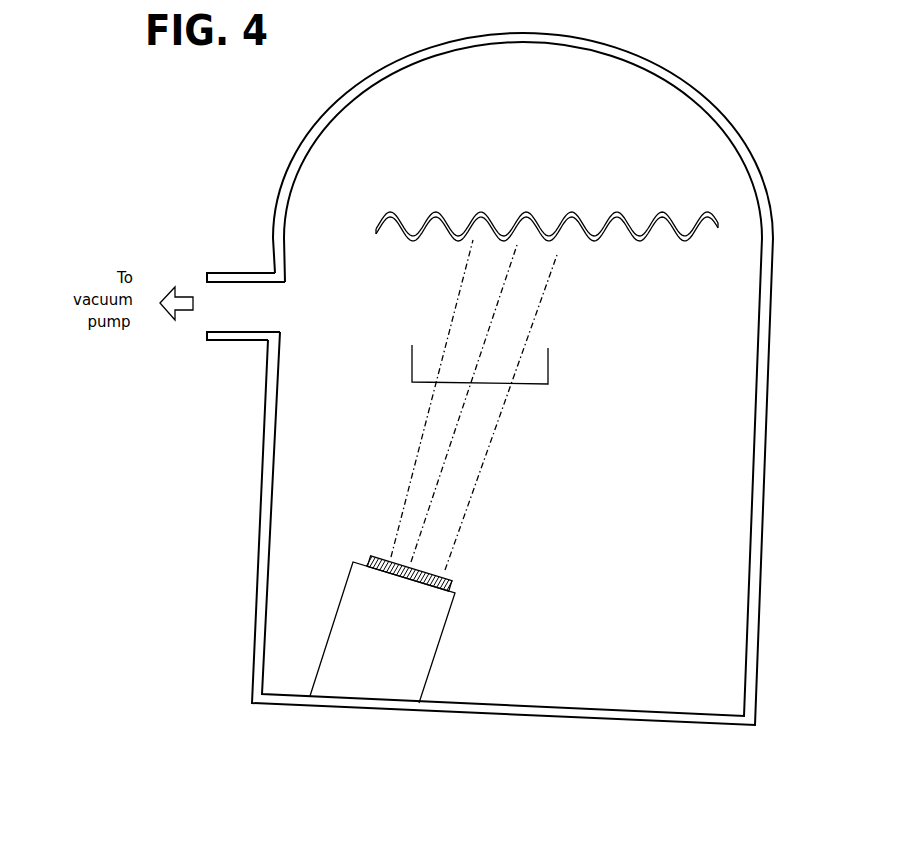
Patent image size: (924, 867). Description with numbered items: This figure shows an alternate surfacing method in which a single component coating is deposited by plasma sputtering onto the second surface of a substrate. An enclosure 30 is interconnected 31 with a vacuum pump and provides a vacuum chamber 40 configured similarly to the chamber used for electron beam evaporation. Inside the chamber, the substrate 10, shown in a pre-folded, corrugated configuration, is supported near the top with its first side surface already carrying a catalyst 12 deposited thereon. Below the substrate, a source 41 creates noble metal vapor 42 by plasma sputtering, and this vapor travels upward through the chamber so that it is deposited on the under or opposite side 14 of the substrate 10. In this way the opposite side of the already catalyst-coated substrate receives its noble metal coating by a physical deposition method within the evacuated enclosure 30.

The enclosure 30 is at (738, 132).
The interconnection with vacuum pump 31 is at (238, 280).
The vacuum chamber 40 is at (463, 131).
The substrate 10 is at (631, 248).
The catalyst 12 is at (720, 233).
The underside of substrate 14 is at (645, 243).
The plasma sputtering source 41 is at (370, 558).
The noble metal vapor 42 is at (535, 385).